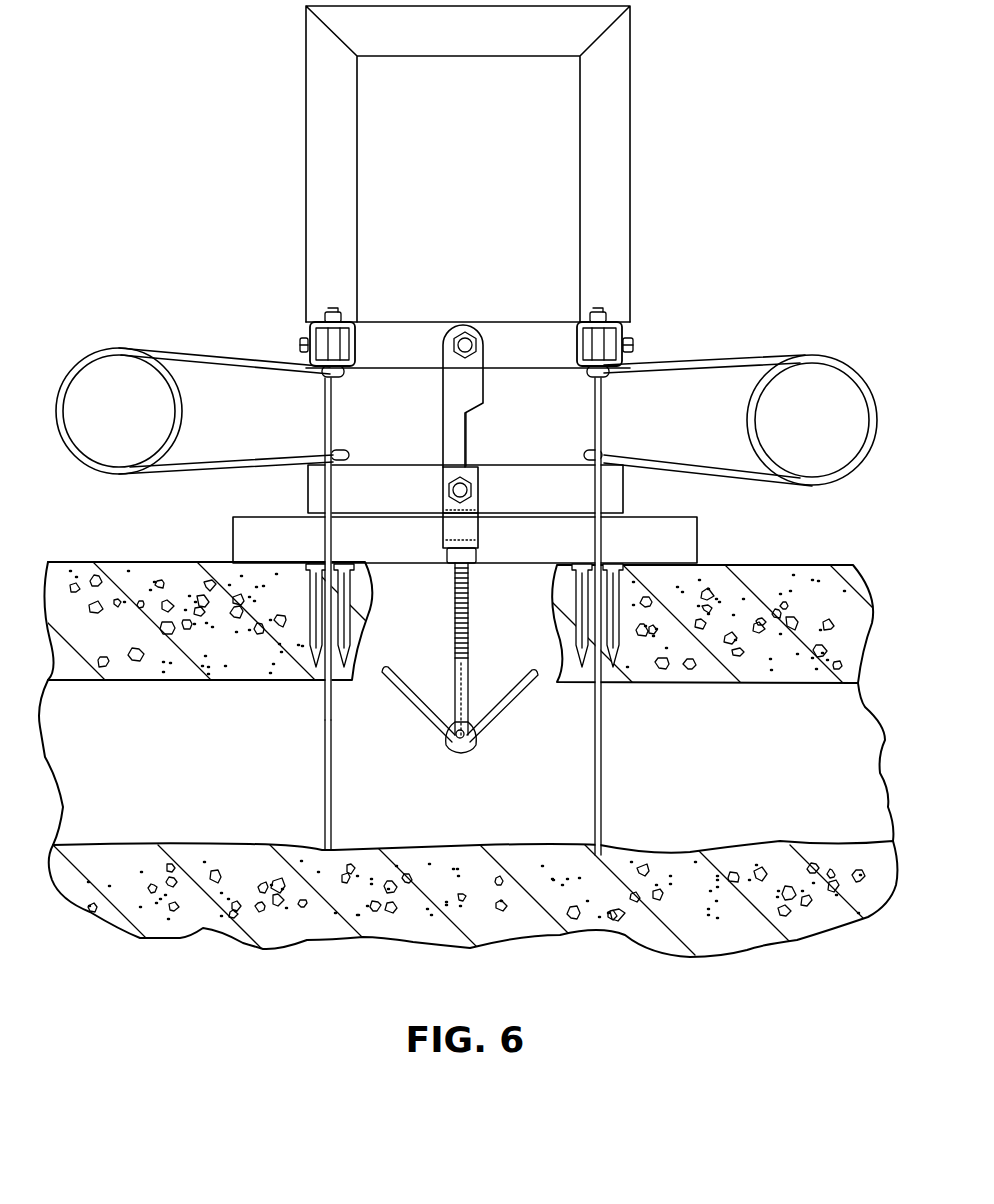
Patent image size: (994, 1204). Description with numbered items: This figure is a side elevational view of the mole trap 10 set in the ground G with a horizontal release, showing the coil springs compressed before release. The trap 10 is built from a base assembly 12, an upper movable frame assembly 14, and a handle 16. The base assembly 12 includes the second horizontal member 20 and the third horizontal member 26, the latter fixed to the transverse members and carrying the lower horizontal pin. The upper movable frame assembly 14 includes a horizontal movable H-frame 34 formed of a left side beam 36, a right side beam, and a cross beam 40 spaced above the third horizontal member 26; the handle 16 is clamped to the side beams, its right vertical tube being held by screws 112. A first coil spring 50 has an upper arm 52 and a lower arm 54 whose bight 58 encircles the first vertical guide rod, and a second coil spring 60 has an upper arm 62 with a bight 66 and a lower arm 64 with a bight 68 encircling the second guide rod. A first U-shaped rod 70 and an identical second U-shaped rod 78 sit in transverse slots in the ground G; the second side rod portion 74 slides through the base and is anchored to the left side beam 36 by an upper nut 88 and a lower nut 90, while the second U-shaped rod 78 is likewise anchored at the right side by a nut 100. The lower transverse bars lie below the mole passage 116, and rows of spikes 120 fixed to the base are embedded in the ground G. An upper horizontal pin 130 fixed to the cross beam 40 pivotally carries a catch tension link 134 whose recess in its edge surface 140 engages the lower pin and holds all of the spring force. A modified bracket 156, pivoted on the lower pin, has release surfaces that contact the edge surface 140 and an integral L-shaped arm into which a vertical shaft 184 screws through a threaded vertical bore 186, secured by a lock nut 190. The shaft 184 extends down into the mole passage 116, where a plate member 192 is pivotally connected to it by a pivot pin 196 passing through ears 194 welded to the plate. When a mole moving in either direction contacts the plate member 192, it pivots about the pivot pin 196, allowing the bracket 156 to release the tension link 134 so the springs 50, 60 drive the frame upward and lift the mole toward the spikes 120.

The mole trap 10 is at (222, 100).
The base assembly 12 is at (206, 531).
The upper movable frame assembly 14 is at (236, 318).
The handle 16 is at (630, 148).
The second horizontal member 20 is at (697, 547).
The third horizontal member 26 is at (308, 475).
The horizontal movable H-frame 34 is at (630, 332).
The left side beam 36 is at (308, 352).
The cross beam 40 is at (393, 320).
The first coil spring 50 is at (82, 362).
The upper arm 52 is at (165, 350).
The lower arm 54 is at (215, 463).
The bight 58 is at (340, 453).
The second coil spring 60 is at (855, 365).
The upper arm 62 is at (755, 356).
The lower arm 64 is at (730, 468).
The bight 66 is at (578, 374).
The bight 68 is at (590, 453).
The first U-shaped rod 70 is at (323, 805).
The second side rod portion 74 is at (325, 775).
The second U-shaped rod 78 is at (601, 383).
The upper nut 88 is at (333, 318).
The lower nut 90 is at (320, 374).
The right bolt 100 is at (620, 320).
The screws 112 is at (636, 345).
The mole passage 116 is at (103, 845).
The spikes 120 is at (292, 690).
The upper horizontal pin 130 is at (465, 336).
The catch tension link 134 is at (443, 378).
The edge surface 140 is at (465, 432).
The modified bracket 156 is at (480, 483).
The vertical shaft 184 is at (450, 690).
The threaded vertical bore 186 is at (373, 678).
The lock nut 190 is at (450, 554).
The plate member 192 is at (513, 710).
The ears 194 is at (478, 750).
The pivot pin 196 is at (457, 752).
The ground G is at (107, 562).